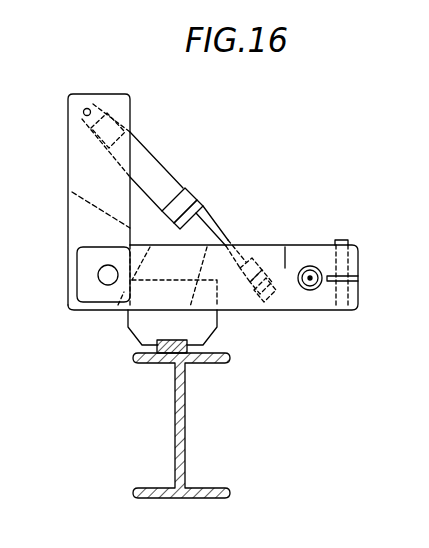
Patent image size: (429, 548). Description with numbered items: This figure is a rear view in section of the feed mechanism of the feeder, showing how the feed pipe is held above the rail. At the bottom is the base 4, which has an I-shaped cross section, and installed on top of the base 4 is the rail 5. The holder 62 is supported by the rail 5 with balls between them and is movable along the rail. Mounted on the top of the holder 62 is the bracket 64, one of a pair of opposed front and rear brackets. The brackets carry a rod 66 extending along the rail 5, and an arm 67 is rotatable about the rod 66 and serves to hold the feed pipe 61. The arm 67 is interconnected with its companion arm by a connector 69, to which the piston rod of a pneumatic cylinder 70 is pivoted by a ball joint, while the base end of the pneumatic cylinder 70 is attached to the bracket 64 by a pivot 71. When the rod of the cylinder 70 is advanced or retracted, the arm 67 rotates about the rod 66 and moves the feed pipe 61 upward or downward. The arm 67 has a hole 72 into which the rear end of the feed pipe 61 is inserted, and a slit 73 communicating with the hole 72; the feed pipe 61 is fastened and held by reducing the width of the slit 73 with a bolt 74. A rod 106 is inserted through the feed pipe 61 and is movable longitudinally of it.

The base 4 is at (186, 428).
The rail 5 is at (143, 344).
The feed pipe 61 is at (307, 268).
The holder 62 is at (204, 328).
The bracket 64 is at (78, 207).
The rod 66 is at (98, 280).
The arm 67 is at (262, 257).
The connector 69 is at (270, 302).
The pneumatic cylinder 70 is at (170, 187).
The pivot 71 is at (83, 111).
The hole 72 is at (316, 290).
The slit 73 is at (354, 278).
The bolt 74 is at (347, 242).
The rod 106 is at (312, 277).